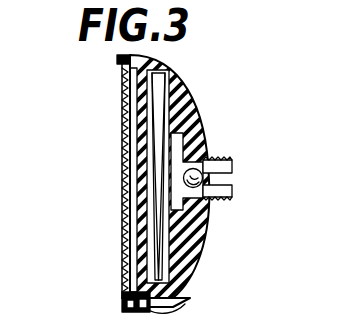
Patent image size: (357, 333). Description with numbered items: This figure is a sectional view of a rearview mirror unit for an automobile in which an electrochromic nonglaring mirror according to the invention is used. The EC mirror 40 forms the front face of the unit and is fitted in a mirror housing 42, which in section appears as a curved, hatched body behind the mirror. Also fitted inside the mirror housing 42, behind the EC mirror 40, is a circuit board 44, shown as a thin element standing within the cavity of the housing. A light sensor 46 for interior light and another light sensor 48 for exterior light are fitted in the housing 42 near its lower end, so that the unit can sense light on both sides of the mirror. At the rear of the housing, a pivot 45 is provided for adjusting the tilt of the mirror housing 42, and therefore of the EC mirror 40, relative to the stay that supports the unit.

The EC mirror 40 is at (125, 122).
The mirror housing 42 is at (177, 108).
The circuit board 44 is at (153, 95).
The pivot 45 is at (203, 164).
The light sensor for interior light 46 is at (130, 312).
The light sensor for exterior light 48 is at (155, 315).